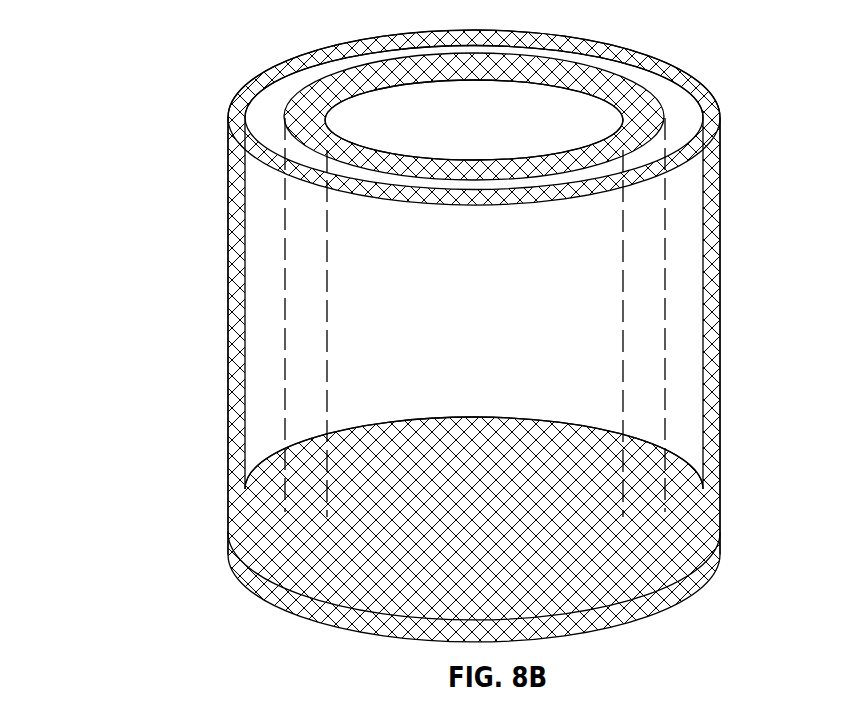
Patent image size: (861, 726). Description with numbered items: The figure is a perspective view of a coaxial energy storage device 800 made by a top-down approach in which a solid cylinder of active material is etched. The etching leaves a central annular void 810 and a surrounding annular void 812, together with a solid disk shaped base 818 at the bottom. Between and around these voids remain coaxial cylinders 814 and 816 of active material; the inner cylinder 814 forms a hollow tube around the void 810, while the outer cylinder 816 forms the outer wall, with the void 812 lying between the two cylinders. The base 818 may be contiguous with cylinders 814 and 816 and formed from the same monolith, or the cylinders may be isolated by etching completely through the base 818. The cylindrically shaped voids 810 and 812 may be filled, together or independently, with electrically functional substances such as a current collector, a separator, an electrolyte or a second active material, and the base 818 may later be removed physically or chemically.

The coaxial energy storage device 800 is at (456, 336).
The annular void 810 is at (492, 136).
The annular void 812 is at (268, 127).
The coaxial cylinder 814 is at (632, 103).
The coaxial cylinder 816 is at (715, 165).
The solid disk shaped base 818 is at (563, 540).